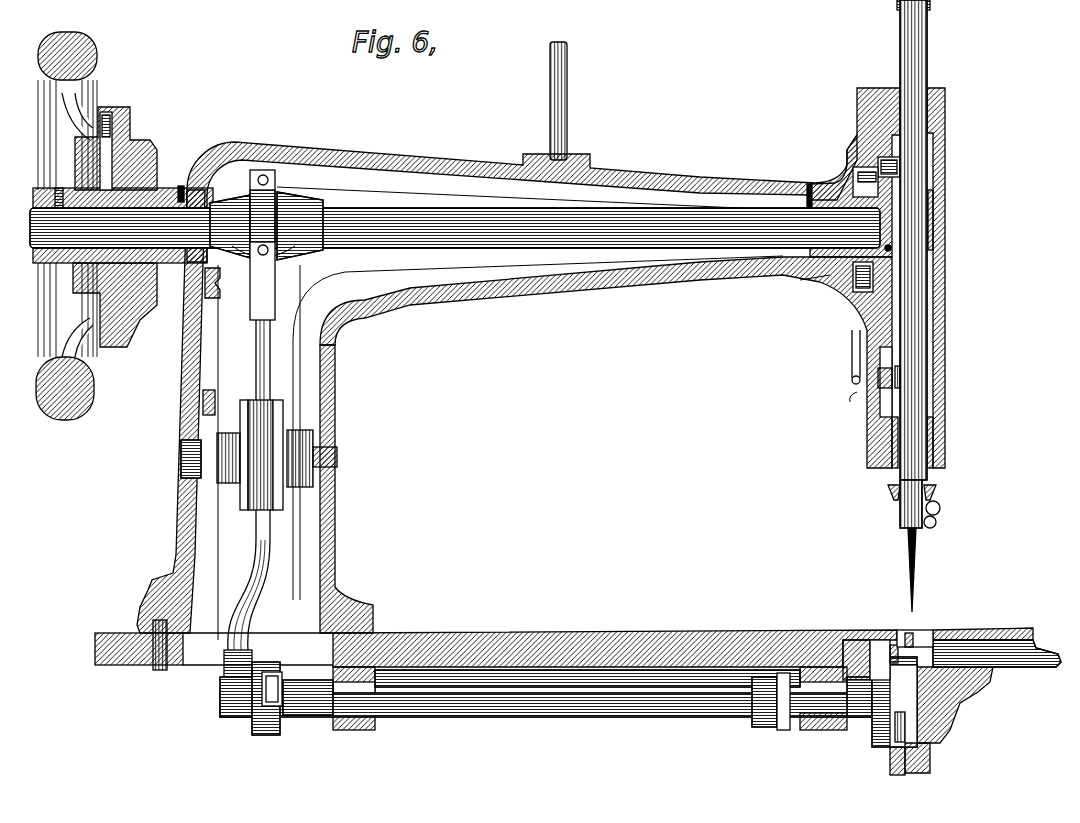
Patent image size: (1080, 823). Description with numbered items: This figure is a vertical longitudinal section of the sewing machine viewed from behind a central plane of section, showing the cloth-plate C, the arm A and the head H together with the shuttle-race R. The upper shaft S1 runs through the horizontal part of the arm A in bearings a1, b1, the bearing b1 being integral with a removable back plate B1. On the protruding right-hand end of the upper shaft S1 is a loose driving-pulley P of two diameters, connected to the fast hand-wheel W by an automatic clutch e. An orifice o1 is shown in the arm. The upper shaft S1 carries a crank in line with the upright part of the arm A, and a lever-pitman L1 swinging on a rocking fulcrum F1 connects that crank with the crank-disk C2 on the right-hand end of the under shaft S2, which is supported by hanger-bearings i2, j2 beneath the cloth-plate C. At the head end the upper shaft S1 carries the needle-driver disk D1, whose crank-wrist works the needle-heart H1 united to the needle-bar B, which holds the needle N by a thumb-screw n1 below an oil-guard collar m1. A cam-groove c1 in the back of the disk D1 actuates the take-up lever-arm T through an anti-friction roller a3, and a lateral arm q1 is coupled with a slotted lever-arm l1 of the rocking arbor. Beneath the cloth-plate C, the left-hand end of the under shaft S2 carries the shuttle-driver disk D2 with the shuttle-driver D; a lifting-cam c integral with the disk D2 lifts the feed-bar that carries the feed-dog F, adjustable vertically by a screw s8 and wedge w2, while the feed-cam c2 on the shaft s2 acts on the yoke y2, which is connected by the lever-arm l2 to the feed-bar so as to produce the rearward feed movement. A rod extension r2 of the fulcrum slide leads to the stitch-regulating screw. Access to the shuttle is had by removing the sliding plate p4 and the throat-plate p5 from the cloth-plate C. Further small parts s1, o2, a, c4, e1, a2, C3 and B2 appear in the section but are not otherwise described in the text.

The hand-wheel W is at (90, 77).
The loose driving-pulley P is at (115, 227).
The automatic clutch e is at (108, 135).
The set screw s1 is at (55, 194).
The bearing b1 is at (176, 188).
The arm A is at (444, 148).
The removable back plate B1 is at (199, 376).
The bolt o2 is at (183, 458).
The head H is at (884, 278).
The needle-heart H1 is at (938, 215).
The nut a is at (889, 169).
The screw c4 is at (865, 184).
The needle-driver disk D1 is at (890, 262).
The cam-groove c1 is at (873, 283).
The bearing a1 is at (804, 289).
The anti-friction roller a3 is at (855, 294).
The upper shaft S1 is at (455, 216).
The slotted lever-arm l1 is at (266, 226).
The orifice o1 is at (278, 190).
The spool pin e1 is at (568, 101).
The lever-pitman L1 is at (258, 371).
The under shaft s2 is at (226, 445).
The rocking fulcrum F1 is at (297, 432).
The cloth-plate C is at (564, 679).
The hanger-bearing j2 is at (350, 732).
The sliding plate p4 is at (997, 639).
The rod extension r2 is at (587, 676).
The under shaft S2 is at (575, 710).
The crank-disk C2 is at (266, 710).
The pitman end a2 is at (266, 674).
The feed-cam c2 is at (764, 702).
The yoke y2 is at (788, 715).
The hanger-bearing i2 is at (823, 712).
The lifting-cam c is at (859, 697).
The shuttle-driver D is at (894, 702).
The shuttle-driver disk D2 is at (892, 744).
The shuttle-race R is at (896, 776).
The bracket C3 is at (917, 764).
The screw s8 is at (848, 640).
The throat-plate p5 is at (875, 640).
The wedge w2 is at (889, 638).
The feed-dog F is at (915, 628).
The bracket B2 is at (837, 668).
The needle-bar B is at (905, 265).
The oil-guard collar m1 is at (926, 490).
The thumb-screw n1 is at (942, 516).
The needle N is at (923, 570).
The take-up lever-arm T is at (848, 357).
The lateral arm q1 is at (905, 378).
The lever-arm l2 is at (851, 397).